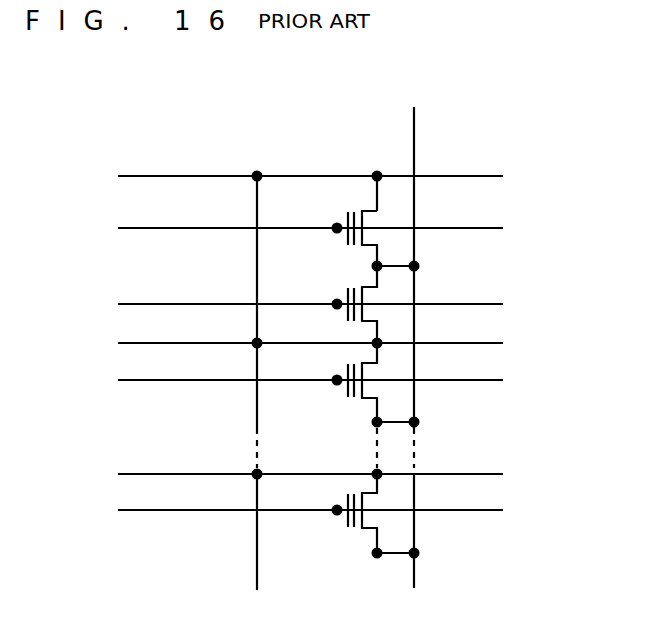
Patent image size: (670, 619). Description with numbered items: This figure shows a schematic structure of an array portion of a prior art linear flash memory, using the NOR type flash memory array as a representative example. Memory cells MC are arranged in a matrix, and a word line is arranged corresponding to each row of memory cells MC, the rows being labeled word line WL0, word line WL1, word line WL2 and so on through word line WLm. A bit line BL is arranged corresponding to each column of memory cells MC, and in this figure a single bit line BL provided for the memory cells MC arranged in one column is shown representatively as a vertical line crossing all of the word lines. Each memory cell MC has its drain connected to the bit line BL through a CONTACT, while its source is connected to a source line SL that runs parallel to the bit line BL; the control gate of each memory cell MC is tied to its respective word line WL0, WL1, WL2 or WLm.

The bit line BL is at (414, 128).
The source line SL is at (257, 557).
The memory cell MC is at (350, 208).
The word line WL0 is at (332, 228).
The word line WL1 is at (332, 304).
The word line WL2 is at (332, 380).
The word line WLm is at (335, 510).
The contact CONTACT is at (427, 266).